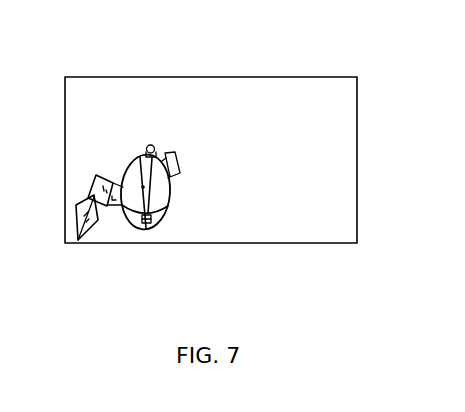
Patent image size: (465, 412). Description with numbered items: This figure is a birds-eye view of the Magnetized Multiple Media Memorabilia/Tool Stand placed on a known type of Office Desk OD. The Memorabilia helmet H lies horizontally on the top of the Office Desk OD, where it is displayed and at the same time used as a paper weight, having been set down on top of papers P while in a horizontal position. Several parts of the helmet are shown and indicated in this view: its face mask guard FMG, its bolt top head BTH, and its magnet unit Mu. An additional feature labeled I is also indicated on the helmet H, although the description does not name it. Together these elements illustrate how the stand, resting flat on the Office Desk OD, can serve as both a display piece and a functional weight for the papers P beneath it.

The Office Desk OD is at (335, 168).
The Memorabilia helmet H is at (173, 185).
The bolt top head BTH is at (143, 187).
The inlet I is at (152, 150).
The magnet unit Mu is at (148, 221).
The face mask guard FMG is at (129, 233).
The papers P is at (78, 240).